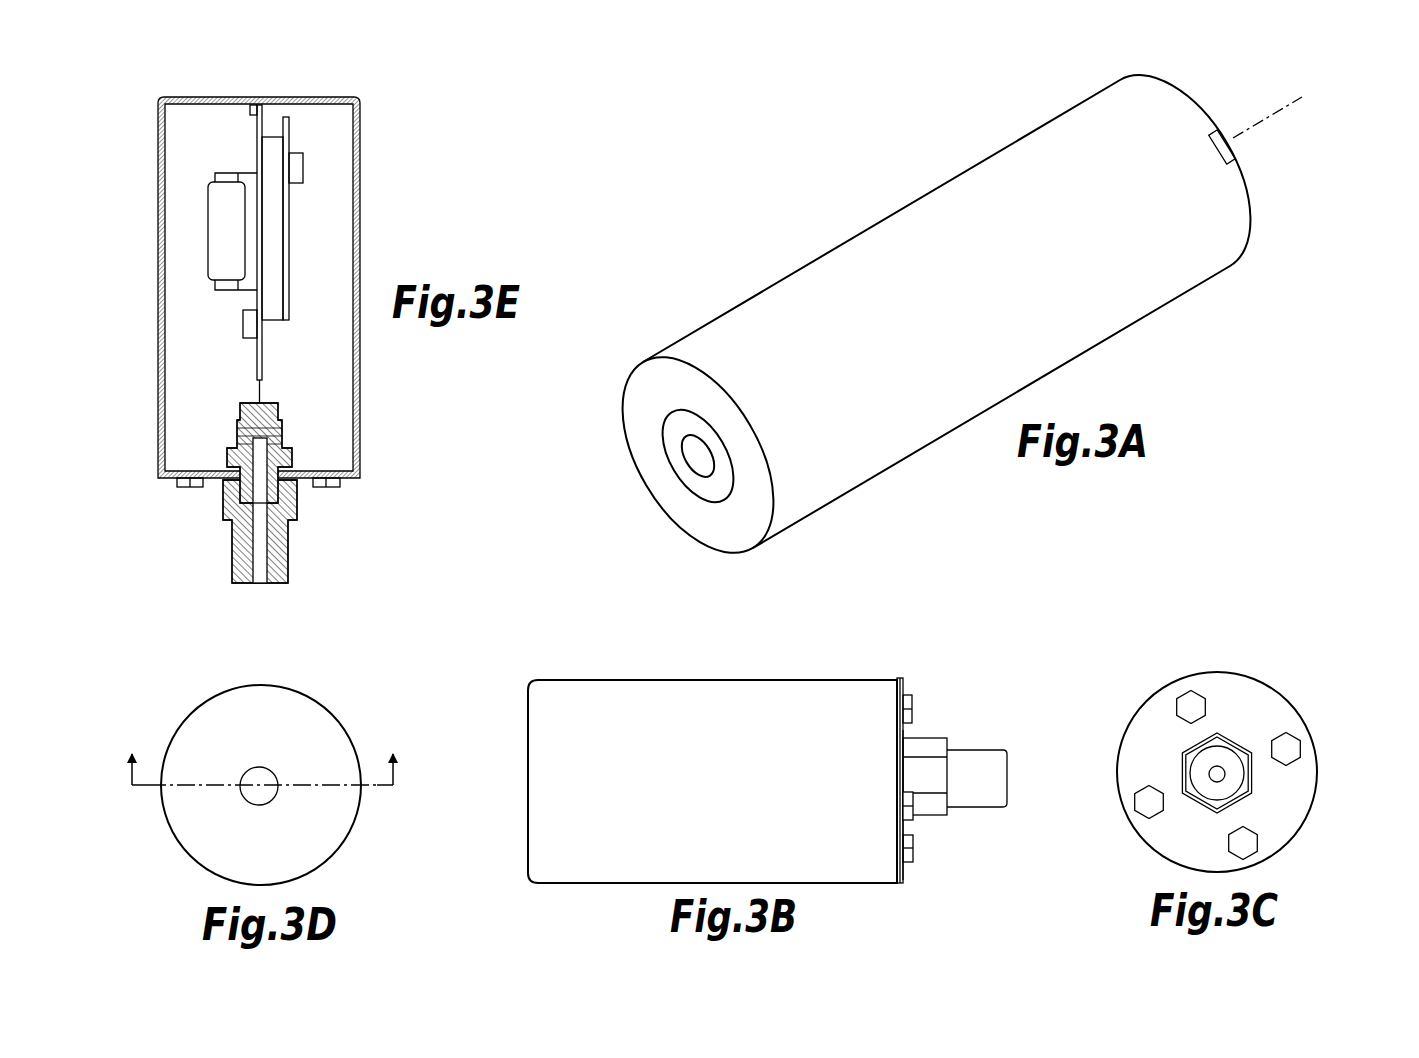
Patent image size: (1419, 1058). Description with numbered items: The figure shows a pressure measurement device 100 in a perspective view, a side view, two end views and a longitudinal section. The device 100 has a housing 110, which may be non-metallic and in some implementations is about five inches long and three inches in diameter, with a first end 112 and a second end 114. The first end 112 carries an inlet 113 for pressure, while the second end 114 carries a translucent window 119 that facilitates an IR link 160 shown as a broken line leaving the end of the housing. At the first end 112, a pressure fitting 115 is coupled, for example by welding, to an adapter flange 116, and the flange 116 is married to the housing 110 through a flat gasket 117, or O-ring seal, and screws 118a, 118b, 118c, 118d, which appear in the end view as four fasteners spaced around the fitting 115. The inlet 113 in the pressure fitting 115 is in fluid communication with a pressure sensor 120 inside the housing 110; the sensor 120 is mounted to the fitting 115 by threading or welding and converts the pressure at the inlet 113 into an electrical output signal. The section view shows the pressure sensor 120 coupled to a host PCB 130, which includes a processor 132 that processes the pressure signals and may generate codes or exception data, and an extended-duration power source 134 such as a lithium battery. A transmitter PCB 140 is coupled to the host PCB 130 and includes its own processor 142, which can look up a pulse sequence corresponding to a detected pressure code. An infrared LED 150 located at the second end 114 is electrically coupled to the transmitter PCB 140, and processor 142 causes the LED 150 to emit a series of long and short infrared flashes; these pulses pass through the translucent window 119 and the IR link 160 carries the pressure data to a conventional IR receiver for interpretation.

In FIG. 3E, the pressure measurement device 100 is at (255, 335).
In FIG. 3A, the pressure measurement device 100 is at (987, 341).
In FIG. 3B, the pressure measurement device 100 is at (779, 788).
In FIG. 3C, the pressure measurement device 100 is at (1219, 739).
In FIG. 3D, the pressure measurement device 100 is at (266, 758).
In FIG. 3E, the housing 110 is at (207, 292).
In FIG. 3A, the housing 110 is at (987, 341).
In FIG. 3B, the housing 110 is at (734, 793).
In FIG. 3A, the first end 112 is at (733, 538).
In FIG. 3B, the first end 112 is at (820, 885).
In FIG. 3E, the inlet 113 is at (258, 583).
In FIG. 3A, the inlet 113 is at (695, 458).
In FIG. 3C, the inlet 113 is at (1225, 775).
In FIG. 3E, the second end 114 is at (158, 125).
In FIG. 3A, the second end 114 is at (1232, 247).
In FIG. 3D, the second end 114 is at (347, 837).
In FIG. 3E, the pressure fitting 115 is at (290, 567).
In FIG. 3B, the pressure fitting 115 is at (980, 748).
In FIG. 3C, the pressure fitting 115 is at (1222, 753).
In FIG. 3B, the adapter flange 116 is at (908, 867).
In FIG. 3C, the adapter flange 116 is at (1155, 835).
In FIG. 3B, the flat gasket 117 is at (898, 885).
In FIG. 3B, the screw 118a is at (912, 708).
In FIG. 3C, the screw 118a is at (1190, 693).
In FIG. 3C, the screw 118b is at (1298, 748).
In FIG. 3B, the screw 118c is at (913, 848).
In FIG. 3C, the screw 118c is at (1253, 843).
In FIG. 3B, the screw 118d is at (913, 805).
In FIG. 3C, the screw 118d is at (1137, 802).
In FIG. 3A, the translucent window 119 is at (1240, 150).
In FIG. 3D, the translucent window 119 is at (260, 770).
In FIG. 3E, the pressure sensor 120 is at (279, 408).
In FIG. 3E, the host PCB 130 is at (266, 351).
In FIG. 3E, the processor 132 is at (243, 323).
In FIG. 3E, the extended-duration power source 134 is at (208, 232).
In FIG. 3E, the transmitter PCB 140 is at (290, 208).
In FIG. 3E, the processor 142 is at (303, 170).
In FIG. 3E, the infrared LED 150 is at (250, 108).
In FIG. 3A, the IR link 160 is at (1287, 108).